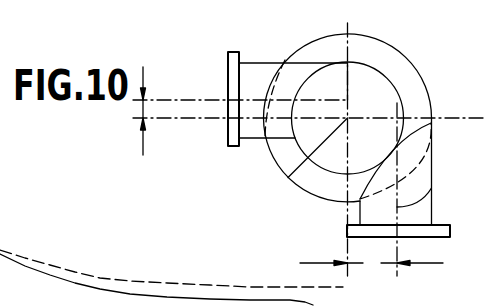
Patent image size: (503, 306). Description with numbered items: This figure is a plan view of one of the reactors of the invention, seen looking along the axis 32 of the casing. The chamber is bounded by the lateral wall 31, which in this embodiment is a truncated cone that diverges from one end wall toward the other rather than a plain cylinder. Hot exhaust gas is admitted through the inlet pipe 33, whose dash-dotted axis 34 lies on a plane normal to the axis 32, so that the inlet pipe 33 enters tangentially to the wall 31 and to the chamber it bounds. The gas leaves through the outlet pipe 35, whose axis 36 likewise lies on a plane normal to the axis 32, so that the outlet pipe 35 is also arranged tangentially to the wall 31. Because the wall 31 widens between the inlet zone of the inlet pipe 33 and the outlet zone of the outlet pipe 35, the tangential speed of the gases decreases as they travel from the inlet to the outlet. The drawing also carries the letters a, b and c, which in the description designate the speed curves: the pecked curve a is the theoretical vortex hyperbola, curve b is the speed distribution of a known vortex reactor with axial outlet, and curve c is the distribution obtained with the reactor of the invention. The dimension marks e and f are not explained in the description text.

The wall 31 is at (413, 62).
The axis 32 is at (289, 179).
The inlet pipe 33 is at (251, 141).
The axis of the inlet pipe 34 is at (172, 98).
The outlet pipe 35 is at (434, 216).
The axis of the outlet pipe 36 is at (432, 189).
The pecked curve a is at (170, 283).
The curve b is at (213, 291).
The curve c is at (4, 296).
The offset dimension e is at (136, 111).
The offset dimension f is at (371, 261).